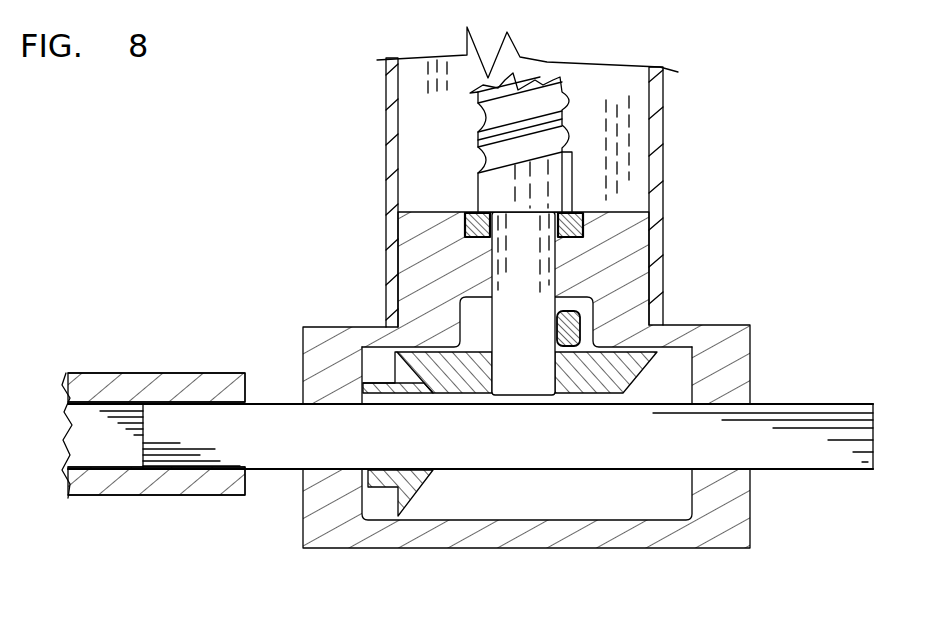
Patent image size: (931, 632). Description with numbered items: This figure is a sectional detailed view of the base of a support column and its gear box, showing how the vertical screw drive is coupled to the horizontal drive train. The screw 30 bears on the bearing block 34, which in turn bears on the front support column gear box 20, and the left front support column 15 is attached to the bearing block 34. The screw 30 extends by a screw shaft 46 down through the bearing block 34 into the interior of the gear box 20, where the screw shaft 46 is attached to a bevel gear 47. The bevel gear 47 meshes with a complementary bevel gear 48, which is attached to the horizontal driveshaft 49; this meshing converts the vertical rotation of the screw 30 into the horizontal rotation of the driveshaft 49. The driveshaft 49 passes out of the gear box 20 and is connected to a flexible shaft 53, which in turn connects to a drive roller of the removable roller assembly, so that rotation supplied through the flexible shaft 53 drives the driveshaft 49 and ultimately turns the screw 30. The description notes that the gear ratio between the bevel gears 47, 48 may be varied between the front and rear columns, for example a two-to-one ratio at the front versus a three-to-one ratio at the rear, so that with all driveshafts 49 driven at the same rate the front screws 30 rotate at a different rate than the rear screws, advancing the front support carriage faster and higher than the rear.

The left front support column 15 is at (663, 193).
The front support column gear box 20 is at (563, 549).
The screw 30 is at (572, 108).
The bearing block 34 is at (630, 268).
The screw shaft 46 is at (507, 262).
The bevel gear 47 is at (466, 325).
The complementary bevel gear 48 is at (422, 490).
The driveshaft 49 is at (300, 442).
The flexible shaft 53 is at (95, 372).